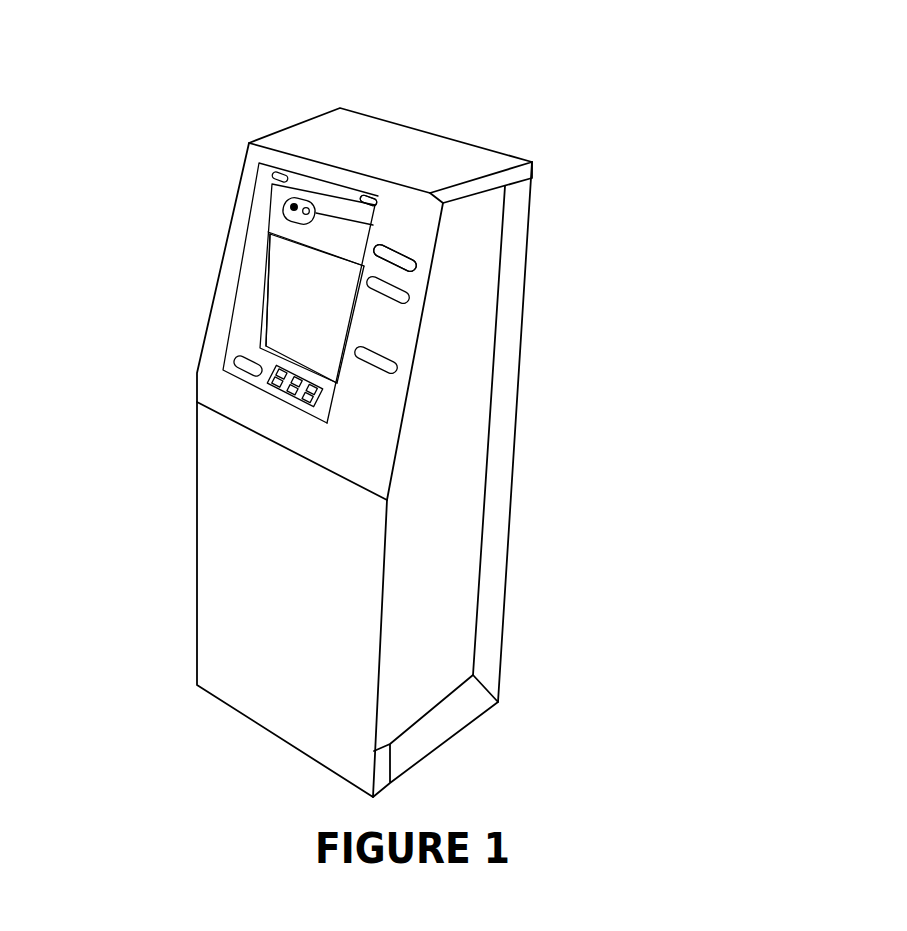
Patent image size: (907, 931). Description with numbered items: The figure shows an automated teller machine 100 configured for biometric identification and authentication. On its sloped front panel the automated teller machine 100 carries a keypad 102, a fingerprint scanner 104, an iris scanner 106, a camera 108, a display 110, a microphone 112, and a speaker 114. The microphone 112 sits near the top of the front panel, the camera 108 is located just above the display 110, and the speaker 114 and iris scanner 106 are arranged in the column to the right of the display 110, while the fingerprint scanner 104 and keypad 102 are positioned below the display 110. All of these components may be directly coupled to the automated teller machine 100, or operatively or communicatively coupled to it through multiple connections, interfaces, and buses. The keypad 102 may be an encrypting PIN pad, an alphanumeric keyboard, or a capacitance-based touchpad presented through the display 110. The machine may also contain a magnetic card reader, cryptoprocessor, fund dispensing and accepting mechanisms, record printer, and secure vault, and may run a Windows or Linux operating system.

The automated teller machine 100 is at (678, 93).
The keypad 102 is at (323, 398).
The fingerprint scanner 104 is at (236, 366).
The iris scanner 106 is at (377, 220).
The camera 108 is at (291, 207).
The display 110 is at (287, 292).
The microphone 112 is at (281, 170).
The speaker 114 is at (378, 199).